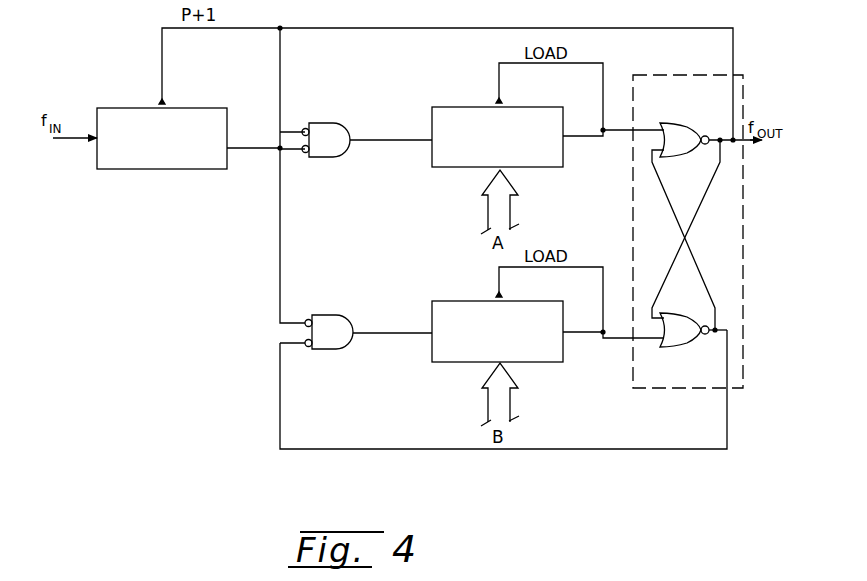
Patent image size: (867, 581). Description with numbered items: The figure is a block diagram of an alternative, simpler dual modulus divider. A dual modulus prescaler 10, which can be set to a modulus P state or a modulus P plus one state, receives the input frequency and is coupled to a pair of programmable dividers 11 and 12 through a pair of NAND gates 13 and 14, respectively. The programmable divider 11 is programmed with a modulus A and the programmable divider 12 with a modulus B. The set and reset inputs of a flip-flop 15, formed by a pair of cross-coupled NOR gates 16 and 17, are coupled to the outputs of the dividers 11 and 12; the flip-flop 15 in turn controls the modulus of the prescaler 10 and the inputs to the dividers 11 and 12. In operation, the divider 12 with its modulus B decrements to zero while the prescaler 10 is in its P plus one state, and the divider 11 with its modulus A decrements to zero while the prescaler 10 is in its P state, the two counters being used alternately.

The dual modulus prescaler 10 is at (173, 169).
The programmable divider 11 is at (472, 170).
The programmable divider 12 is at (472, 363).
The NAND gate 13 is at (322, 155).
The NAND gate 14 is at (328, 345).
The flip-flop 15 is at (748, 104).
The NOR gate 16 is at (678, 122).
The NOR gate 17 is at (673, 347).